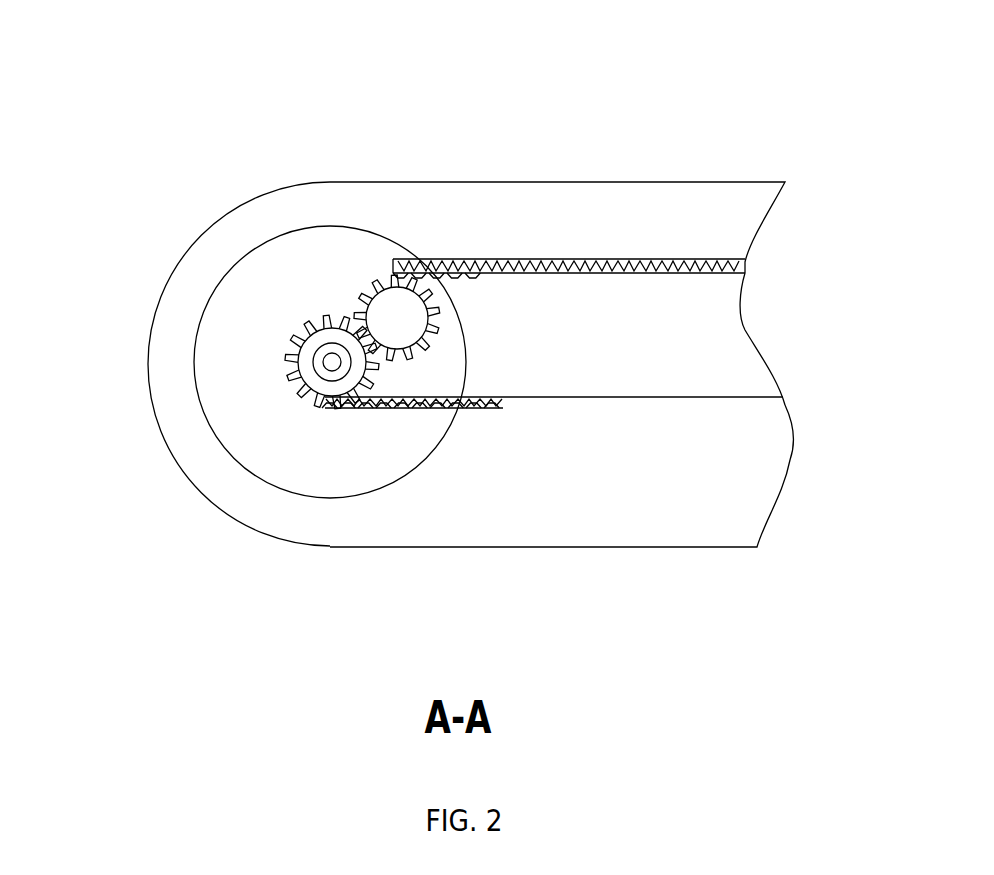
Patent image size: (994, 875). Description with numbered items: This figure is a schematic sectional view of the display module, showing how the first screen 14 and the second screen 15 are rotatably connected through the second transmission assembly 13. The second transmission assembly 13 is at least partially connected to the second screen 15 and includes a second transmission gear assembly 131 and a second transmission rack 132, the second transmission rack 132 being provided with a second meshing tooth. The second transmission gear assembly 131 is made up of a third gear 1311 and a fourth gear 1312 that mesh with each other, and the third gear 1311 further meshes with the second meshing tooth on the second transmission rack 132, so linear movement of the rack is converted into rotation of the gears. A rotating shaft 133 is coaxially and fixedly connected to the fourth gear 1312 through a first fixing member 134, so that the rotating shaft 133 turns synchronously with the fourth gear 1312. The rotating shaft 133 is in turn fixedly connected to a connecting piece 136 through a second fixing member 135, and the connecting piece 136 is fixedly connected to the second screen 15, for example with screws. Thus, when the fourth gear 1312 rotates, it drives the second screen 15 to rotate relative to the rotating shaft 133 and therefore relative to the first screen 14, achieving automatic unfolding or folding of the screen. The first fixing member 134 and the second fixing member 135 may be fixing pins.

The second transmission assembly 13 is at (499, 208).
The second transmission gear assembly 131 is at (346, 230).
The third gear 1311 is at (370, 289).
The fourth gear 1312 is at (332, 318).
The second transmission rack 132 is at (462, 262).
The rotating shaft 133 is at (333, 362).
The first fixing member 134 is at (318, 332).
The second fixing member 135 is at (320, 399).
The connecting piece 136 is at (503, 406).
The first screen 14 is at (660, 217).
The second screen 15 is at (695, 512).